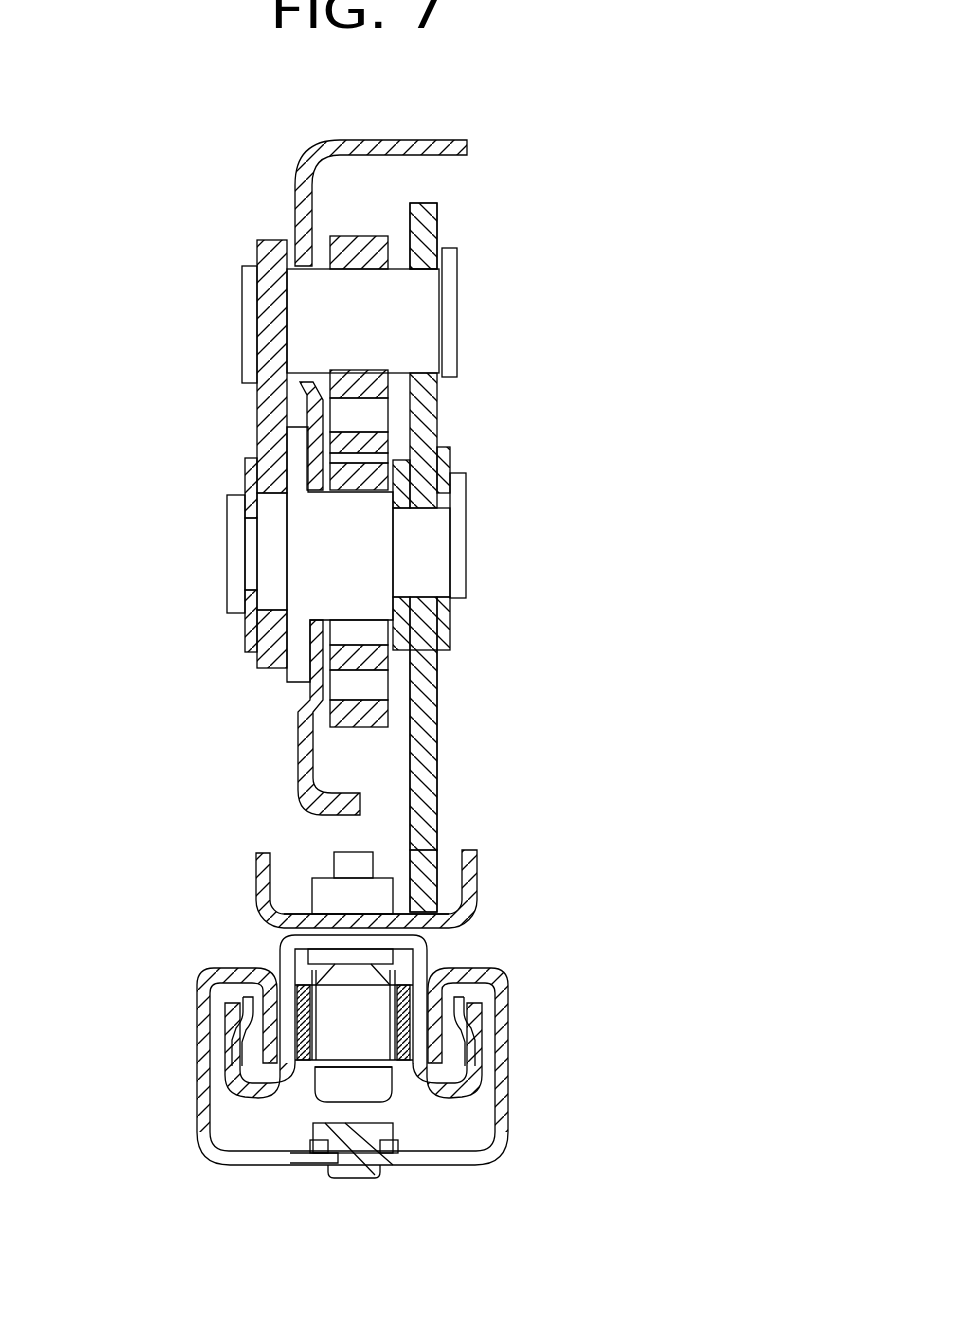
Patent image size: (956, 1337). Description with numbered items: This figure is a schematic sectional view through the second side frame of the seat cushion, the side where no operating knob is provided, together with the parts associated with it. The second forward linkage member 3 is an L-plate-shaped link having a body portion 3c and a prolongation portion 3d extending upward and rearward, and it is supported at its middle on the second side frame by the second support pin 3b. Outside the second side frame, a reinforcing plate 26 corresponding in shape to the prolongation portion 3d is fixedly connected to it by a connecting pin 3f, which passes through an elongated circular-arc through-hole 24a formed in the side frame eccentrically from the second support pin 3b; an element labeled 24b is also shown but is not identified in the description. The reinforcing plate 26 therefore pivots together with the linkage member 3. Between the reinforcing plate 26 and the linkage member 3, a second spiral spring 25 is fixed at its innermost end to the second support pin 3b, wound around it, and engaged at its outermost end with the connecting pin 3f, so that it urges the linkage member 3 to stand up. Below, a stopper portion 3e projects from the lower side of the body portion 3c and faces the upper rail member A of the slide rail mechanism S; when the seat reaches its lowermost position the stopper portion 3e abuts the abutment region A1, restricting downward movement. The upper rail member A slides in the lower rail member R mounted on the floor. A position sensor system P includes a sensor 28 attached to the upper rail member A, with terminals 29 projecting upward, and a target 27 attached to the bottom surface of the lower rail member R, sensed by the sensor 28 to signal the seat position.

The elongated through-hole 24a is at (302, 283).
The second terminal member 24b is at (414, 285).
The forward linkage member 3 is at (438, 690).
The prolongation portion 3d is at (437, 214).
The body portion 3c is at (437, 752).
The stopper portion 3e is at (437, 890).
The connecting pin 3f is at (457, 303).
The second support pin 3b is at (466, 530).
The reinforcing plate 26 is at (258, 395).
The second spiral spring 25 is at (363, 727).
The terminals 29 is at (332, 858).
The upper rail member A is at (478, 917).
The abutment region A1 is at (422, 914).
The slide rail mechanism S is at (262, 944).
The sensor 28 is at (343, 1017).
The lower rail member R is at (197, 1028).
The target 27 is at (313, 1127).
The position sensor system P is at (410, 1110).